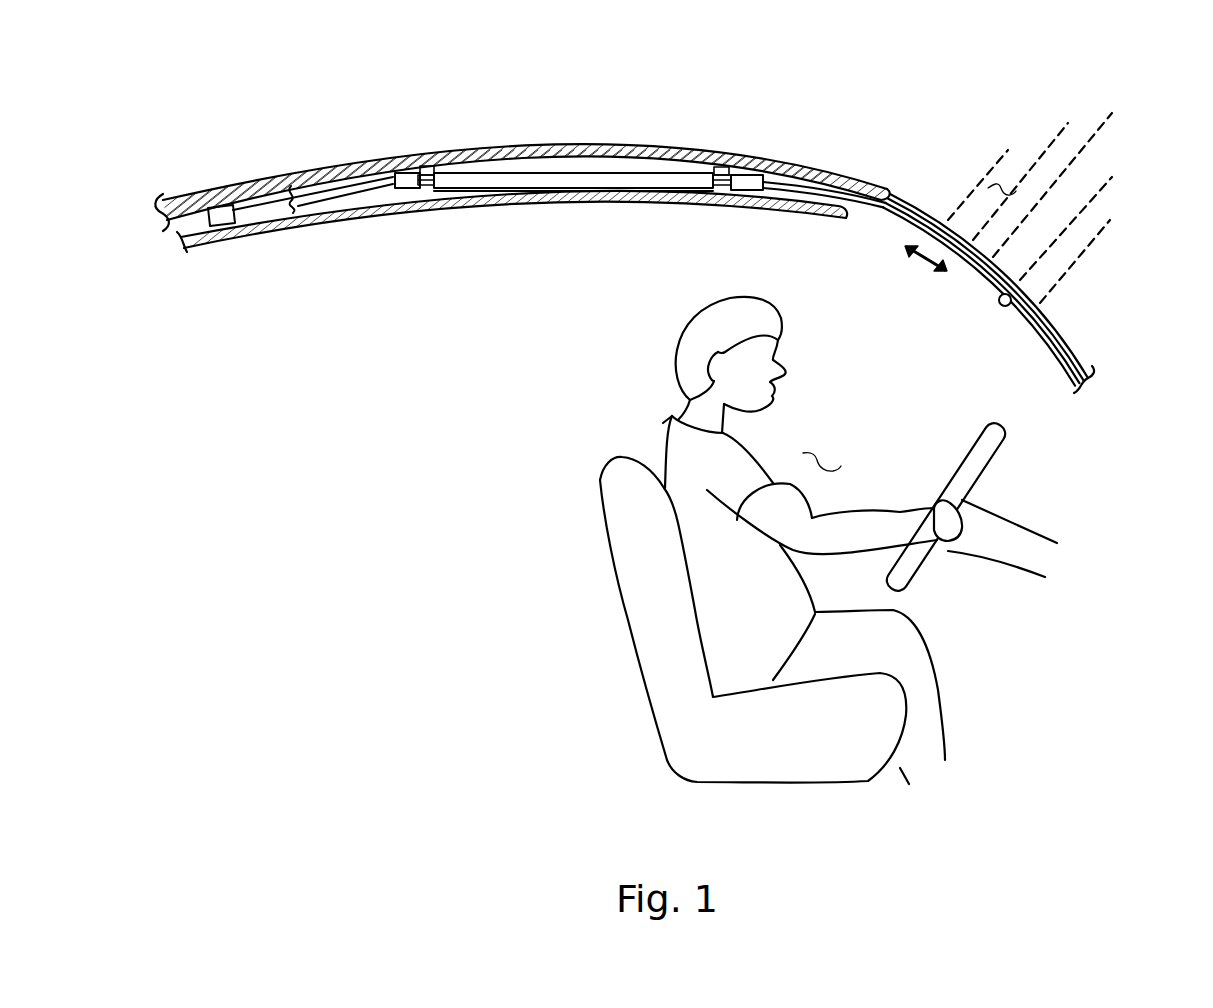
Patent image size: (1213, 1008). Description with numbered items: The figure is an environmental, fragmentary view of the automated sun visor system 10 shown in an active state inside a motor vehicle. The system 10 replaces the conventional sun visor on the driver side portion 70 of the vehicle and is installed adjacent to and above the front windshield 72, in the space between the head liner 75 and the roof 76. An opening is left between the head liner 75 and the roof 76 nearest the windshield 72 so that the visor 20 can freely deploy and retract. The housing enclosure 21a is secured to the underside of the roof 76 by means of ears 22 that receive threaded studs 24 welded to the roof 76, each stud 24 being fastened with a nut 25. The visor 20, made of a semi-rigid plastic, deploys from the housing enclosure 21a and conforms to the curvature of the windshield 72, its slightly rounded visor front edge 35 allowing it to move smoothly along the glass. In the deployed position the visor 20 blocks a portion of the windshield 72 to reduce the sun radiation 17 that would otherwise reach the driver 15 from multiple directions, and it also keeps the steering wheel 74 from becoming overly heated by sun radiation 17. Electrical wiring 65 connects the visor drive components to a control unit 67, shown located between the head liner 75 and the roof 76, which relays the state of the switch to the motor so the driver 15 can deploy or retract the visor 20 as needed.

The automated sun visor system 10 is at (238, 128).
The driver 15 is at (697, 413).
The sun radiation 17 is at (1002, 184).
The visor 20 is at (883, 215).
The housing enclosure 21a is at (592, 178).
The ears 22 is at (432, 182).
The threaded studs 24 is at (426, 166).
The nut 25 is at (425, 189).
The visor front edge 35 is at (1000, 306).
The electrical wiring 65 is at (320, 198).
The control unit 67 is at (225, 221).
The driver side portion 70 is at (823, 457).
The front windshield 72 is at (1072, 354).
The steering wheel 74 is at (975, 462).
The head liner 75 is at (570, 203).
The roof 76 is at (385, 150).